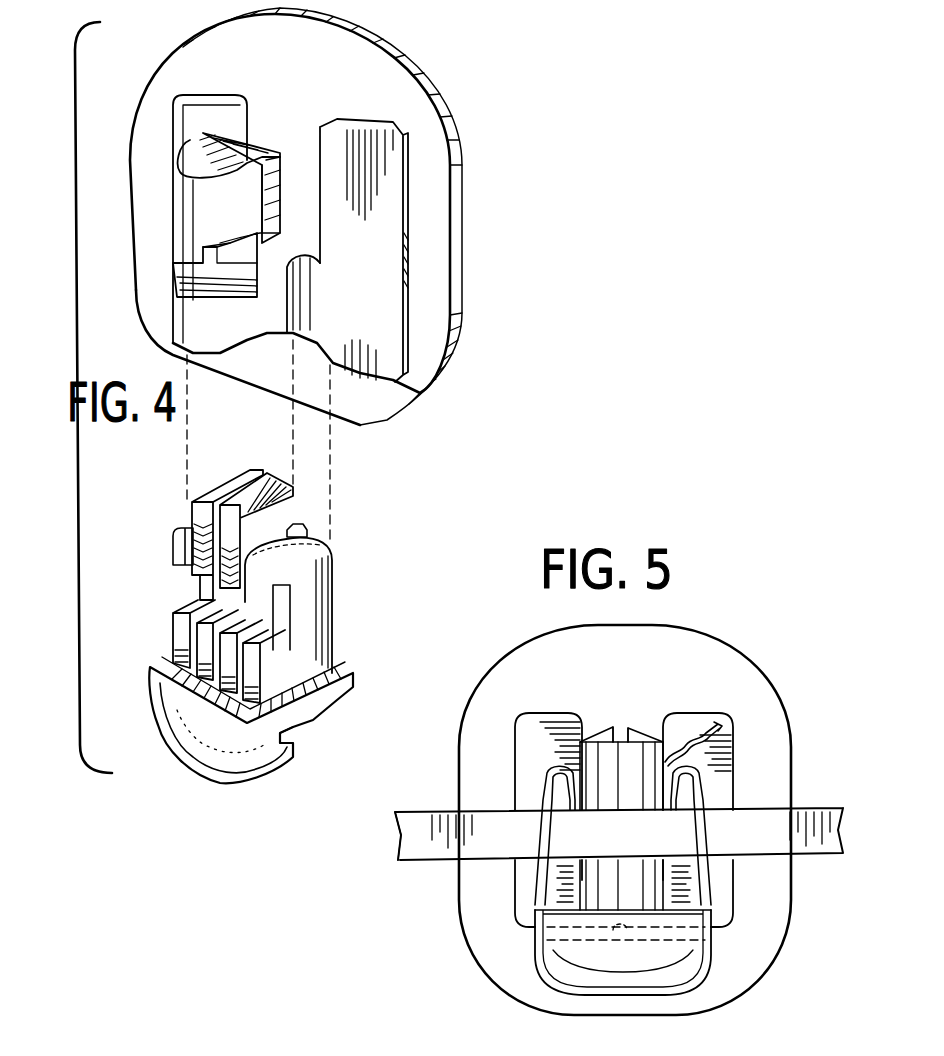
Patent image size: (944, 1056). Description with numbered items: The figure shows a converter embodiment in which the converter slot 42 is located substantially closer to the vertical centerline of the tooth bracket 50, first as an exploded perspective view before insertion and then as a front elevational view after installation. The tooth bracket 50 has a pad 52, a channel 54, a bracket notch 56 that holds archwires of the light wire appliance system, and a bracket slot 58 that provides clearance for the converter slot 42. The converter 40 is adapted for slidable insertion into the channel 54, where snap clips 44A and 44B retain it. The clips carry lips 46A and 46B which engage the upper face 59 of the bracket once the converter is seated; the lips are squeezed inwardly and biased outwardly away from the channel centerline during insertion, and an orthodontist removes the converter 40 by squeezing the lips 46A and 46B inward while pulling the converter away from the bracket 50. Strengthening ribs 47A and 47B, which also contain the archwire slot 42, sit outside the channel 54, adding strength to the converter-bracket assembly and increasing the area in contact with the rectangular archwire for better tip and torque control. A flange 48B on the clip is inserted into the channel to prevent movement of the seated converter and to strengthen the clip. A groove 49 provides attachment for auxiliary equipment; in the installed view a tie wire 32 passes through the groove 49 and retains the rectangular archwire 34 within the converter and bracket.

In FIG. 5, the tie wire 32 is at (710, 838).
In FIG. 5, the rectangular archwire 34 is at (427, 845).
In FIG. 4, the converter 40 is at (165, 623).
In FIG. 4, the converter slot 42 is at (207, 587).
In FIG. 5, the converter slot 42 is at (567, 810).
In FIG. 4, the snap clip 44A is at (193, 515).
In FIG. 4, the snap clip 44B is at (227, 537).
In FIG. 4, the lip 46A is at (190, 500).
In FIG. 5, the lip 46A is at (580, 740).
In FIG. 4, the lip 46B is at (280, 510).
In FIG. 5, the lip 46B is at (663, 740).
In FIG. 4, the strengthening rib 47A is at (177, 547).
In FIG. 5, the strengthening rib 47A is at (563, 880).
In FIG. 4, the strengthening rib 47B is at (313, 562).
In FIG. 5, the strengthening rib 47B is at (683, 897).
In FIG. 4, the flange 48B is at (307, 530).
In FIG. 4, the groove 49 is at (287, 740).
In FIG. 5, the groove 49 is at (627, 937).
In FIG. 4, the tooth bracket 50 is at (455, 116).
In FIG. 5, the tooth bracket 50 is at (713, 636).
In FIG. 4, the pad 52 is at (373, 63).
In FIG. 5, the pad 52 is at (753, 707).
In FIG. 4, the channel 54 is at (190, 143).
In FIG. 4, the bracket notch 56 is at (307, 258).
In FIG. 4, the bracket slot 58 is at (253, 258).
In FIG. 4, the upper face 59 is at (260, 157).
In FIG. 5, the upper face 59 is at (597, 742).